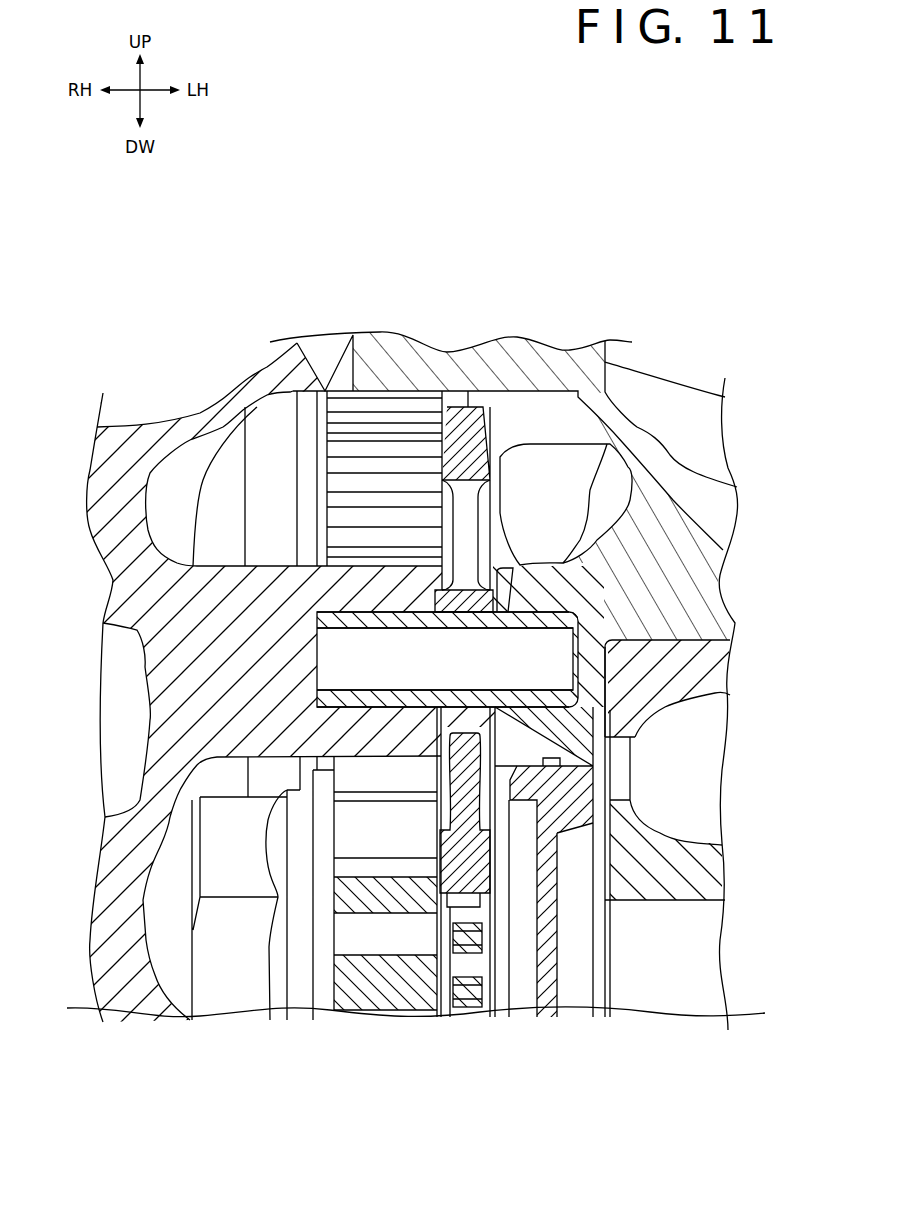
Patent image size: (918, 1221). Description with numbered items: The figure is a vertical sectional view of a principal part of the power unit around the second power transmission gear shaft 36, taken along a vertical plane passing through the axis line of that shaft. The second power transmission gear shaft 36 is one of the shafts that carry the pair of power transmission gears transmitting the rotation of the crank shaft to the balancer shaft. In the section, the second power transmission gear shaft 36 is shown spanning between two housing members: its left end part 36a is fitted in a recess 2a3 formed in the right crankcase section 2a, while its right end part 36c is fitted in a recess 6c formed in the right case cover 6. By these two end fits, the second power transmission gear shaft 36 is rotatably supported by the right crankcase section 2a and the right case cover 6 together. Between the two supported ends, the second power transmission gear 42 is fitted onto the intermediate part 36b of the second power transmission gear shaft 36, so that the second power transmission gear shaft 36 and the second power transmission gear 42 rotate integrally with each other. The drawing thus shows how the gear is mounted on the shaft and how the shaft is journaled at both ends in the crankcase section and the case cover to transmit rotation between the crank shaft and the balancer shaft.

The right case cover 6 is at (115, 494).
The recess 6c is at (338, 628).
The second power transmission gear shaft 36 is at (409, 669).
The left end part 36a is at (512, 612).
The intermediate part 36b is at (450, 698).
The right end part 36c is at (367, 612).
The second power transmission gear 42 is at (490, 430).
The right crankcase section 2a is at (727, 502).
The recess 2a3 is at (565, 633).